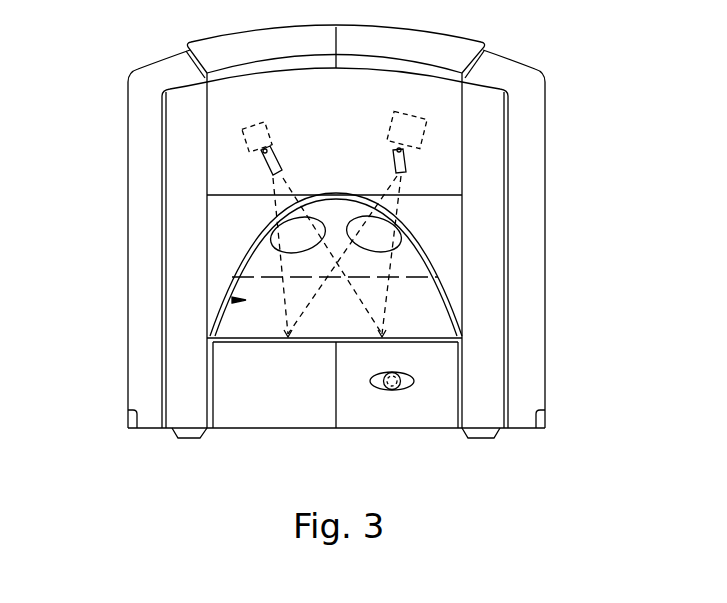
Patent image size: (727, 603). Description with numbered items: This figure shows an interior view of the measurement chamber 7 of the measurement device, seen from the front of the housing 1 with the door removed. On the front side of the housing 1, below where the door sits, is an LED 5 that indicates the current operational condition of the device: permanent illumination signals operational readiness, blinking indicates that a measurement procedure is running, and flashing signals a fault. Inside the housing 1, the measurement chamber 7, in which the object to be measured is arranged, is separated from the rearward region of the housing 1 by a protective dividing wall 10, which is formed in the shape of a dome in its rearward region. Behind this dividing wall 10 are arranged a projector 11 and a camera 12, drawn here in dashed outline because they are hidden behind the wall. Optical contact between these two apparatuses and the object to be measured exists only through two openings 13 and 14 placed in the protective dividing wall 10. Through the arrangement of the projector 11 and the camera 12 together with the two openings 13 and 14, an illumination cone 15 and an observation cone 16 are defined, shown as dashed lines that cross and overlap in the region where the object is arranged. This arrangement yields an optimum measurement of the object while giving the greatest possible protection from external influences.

The housing 1 is at (95, 245).
The LED 5 is at (388, 390).
The measurement chamber 7 is at (216, 308).
The protective dividing wall 10 is at (438, 247).
The projector 11 is at (392, 126).
The camera 12 is at (266, 124).
The opening 13 is at (378, 236).
The opening 14 is at (290, 236).
The illumination cone 15 is at (398, 179).
The observation cone 16 is at (283, 178).